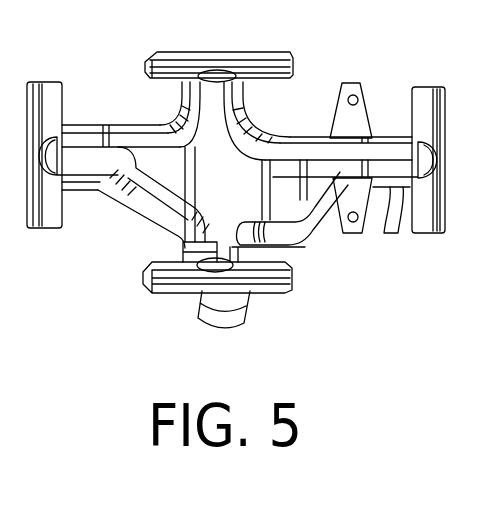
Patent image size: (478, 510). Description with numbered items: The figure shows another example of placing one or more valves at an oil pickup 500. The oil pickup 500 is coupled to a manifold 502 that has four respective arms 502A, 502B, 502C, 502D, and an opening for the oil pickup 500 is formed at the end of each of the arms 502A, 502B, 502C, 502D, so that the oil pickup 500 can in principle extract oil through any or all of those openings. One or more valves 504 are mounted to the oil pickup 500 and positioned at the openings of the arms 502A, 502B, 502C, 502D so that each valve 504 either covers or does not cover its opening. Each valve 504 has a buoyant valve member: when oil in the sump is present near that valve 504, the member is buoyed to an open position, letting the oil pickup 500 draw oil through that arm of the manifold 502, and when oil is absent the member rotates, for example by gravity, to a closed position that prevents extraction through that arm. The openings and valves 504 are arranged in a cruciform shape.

The oil pickup 500 is at (221, 328).
The manifold 502 is at (147, 225).
The arm 502A is at (90, 125).
The arm 502B is at (263, 113).
The arm 502C is at (393, 188).
The arm 502D is at (283, 256).
The valve 504 is at (186, 52).